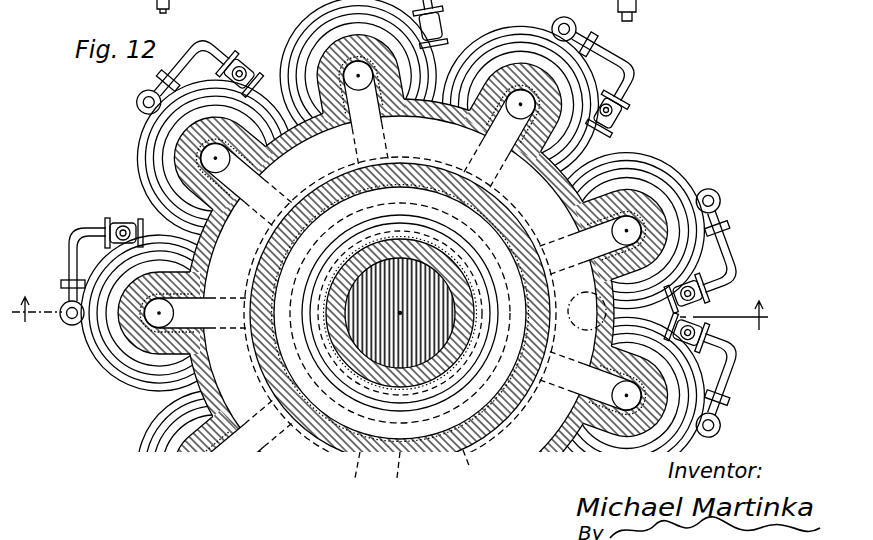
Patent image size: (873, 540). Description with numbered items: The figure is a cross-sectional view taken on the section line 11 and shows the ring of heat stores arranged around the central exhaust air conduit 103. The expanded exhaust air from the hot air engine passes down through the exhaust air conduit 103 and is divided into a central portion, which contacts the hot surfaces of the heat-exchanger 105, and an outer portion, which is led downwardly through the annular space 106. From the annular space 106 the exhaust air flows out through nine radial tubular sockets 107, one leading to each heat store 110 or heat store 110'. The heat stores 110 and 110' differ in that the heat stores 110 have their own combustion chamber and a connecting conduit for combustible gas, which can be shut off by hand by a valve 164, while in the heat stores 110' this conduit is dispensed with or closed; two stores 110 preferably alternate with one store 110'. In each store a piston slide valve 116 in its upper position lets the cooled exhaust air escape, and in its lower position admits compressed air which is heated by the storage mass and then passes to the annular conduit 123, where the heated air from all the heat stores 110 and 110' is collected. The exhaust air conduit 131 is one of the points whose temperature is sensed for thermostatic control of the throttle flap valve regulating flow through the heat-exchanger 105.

The section line 11 is at (390, 303).
The exhaust air conduit 103 is at (468, 307).
The heat-exchanger 105 is at (420, 320).
The annular space 106 is at (425, 313).
The radial tubular socket 107 is at (389, 148).
The heat store 110 is at (406, 270).
The heat store 110' is at (501, 251).
The piston slide valve 116 is at (140, 7).
The annular conduit 123 is at (232, 276).
The exhaust air conduit 131 is at (453, 10).
The valve 164 is at (610, 110).